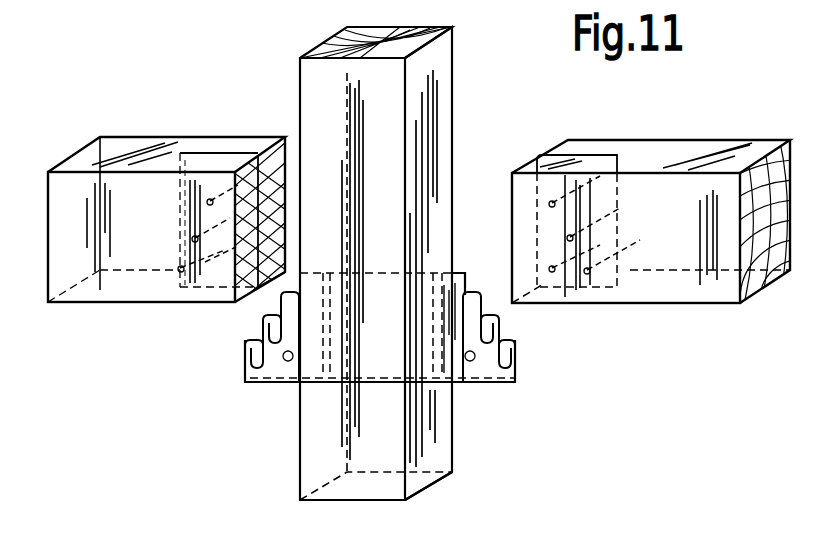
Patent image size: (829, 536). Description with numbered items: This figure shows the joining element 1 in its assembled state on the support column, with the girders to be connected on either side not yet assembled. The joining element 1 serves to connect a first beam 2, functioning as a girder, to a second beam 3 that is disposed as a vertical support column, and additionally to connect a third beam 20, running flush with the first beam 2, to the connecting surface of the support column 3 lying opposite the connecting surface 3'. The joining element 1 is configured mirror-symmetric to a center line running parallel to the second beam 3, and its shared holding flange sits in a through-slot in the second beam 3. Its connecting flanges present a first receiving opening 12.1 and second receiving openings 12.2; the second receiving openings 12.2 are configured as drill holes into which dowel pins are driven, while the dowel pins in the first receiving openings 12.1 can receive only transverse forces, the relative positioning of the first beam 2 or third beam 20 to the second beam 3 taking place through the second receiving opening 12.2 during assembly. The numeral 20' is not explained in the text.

The joining element 1 is at (490, 387).
The first beam 2 is at (696, 136).
The second beam 3 is at (401, 263).
The connecting surface 3' is at (400, 473).
The first receiving opening 12.1 is at (469, 270).
The second receiving opening 12.2 is at (475, 356).
The third beam 20 is at (174, 200).
The post end face 20' is at (347, 37).